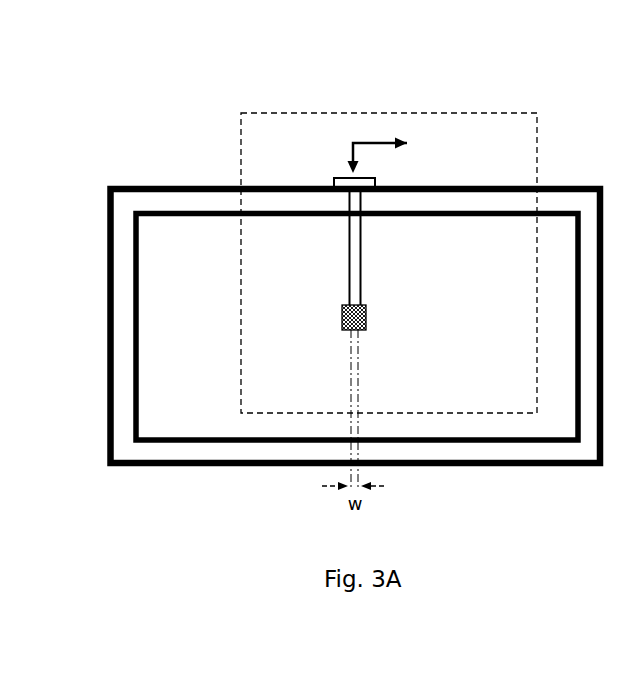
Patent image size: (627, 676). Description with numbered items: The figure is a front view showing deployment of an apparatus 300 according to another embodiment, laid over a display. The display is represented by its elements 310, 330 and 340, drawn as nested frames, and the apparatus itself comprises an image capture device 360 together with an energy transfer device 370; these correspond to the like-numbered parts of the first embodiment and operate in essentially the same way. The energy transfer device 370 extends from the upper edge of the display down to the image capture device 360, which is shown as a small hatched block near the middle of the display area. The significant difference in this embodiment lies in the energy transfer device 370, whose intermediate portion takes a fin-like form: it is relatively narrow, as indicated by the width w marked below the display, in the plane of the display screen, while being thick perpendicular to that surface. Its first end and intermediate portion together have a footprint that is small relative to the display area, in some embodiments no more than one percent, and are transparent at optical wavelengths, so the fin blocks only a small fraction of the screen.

The apparatus 300 is at (287, 112).
The display element 310 is at (121, 186).
The display element 330 is at (222, 229).
The display element 340 is at (133, 290).
The energy transfer device 370 is at (377, 172).
The image capture device 360 is at (366, 330).